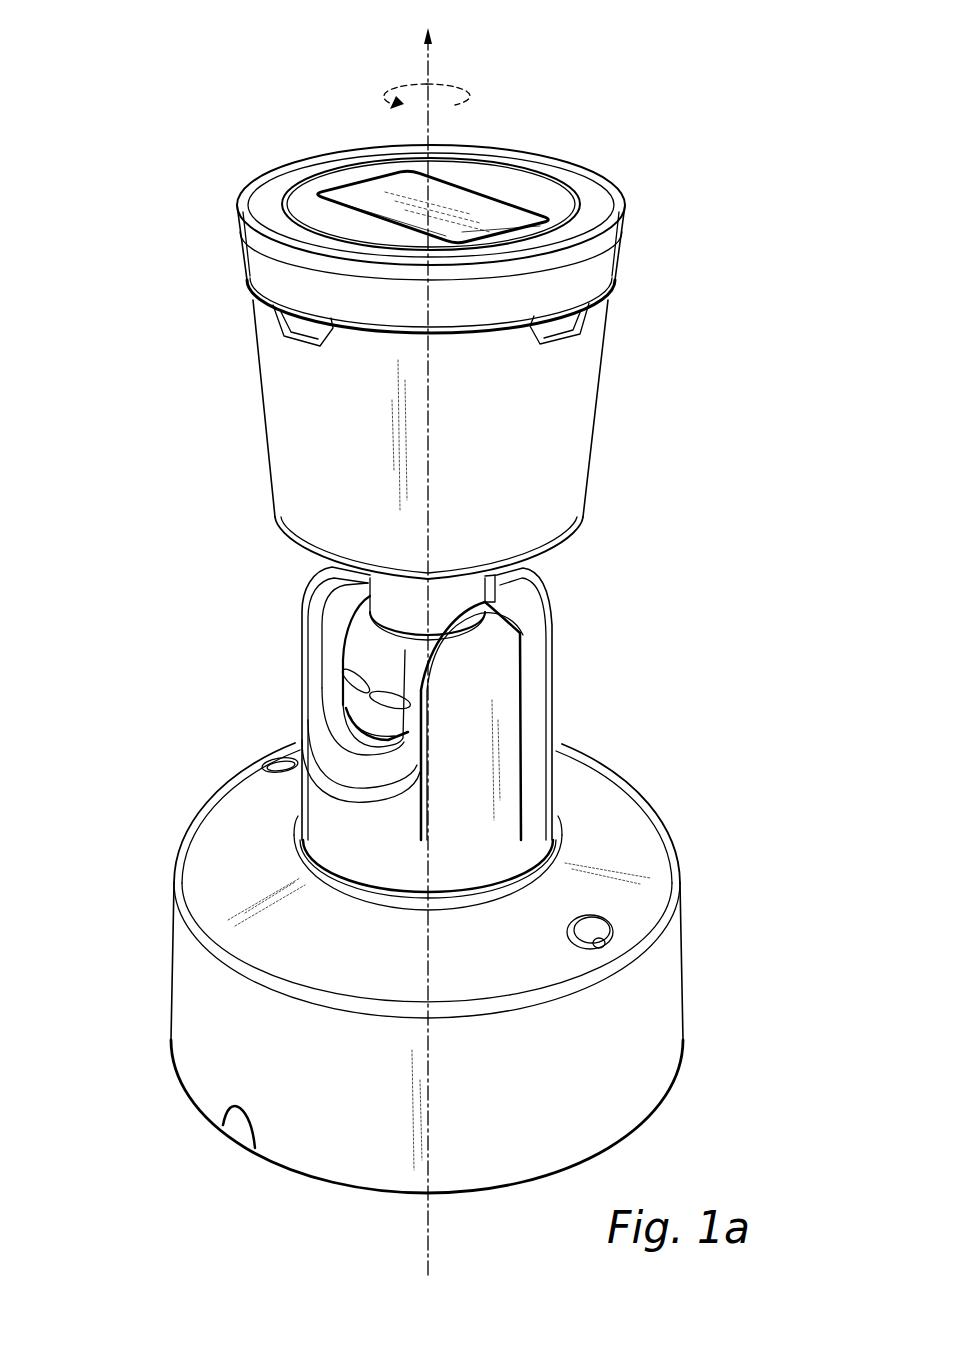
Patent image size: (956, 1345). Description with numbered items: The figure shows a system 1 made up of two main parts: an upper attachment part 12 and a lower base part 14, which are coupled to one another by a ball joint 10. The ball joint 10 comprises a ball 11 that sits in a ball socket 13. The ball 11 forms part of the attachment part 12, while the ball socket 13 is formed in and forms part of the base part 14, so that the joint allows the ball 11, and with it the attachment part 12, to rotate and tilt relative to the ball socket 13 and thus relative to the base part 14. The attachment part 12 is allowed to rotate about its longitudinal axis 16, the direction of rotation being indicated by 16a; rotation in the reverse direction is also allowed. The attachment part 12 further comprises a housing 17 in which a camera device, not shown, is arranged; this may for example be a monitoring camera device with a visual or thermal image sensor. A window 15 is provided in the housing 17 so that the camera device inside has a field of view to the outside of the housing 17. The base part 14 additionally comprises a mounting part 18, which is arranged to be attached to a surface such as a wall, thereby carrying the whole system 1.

The system 1 is at (560, 67).
The ball joint 10 is at (638, 599).
The ball 11 is at (363, 650).
The attachment part 12 is at (737, 152).
The ball socket 13 is at (535, 715).
The base part 14 is at (142, 571).
The window 15 is at (355, 195).
The longitudinal axis 16 is at (429, 70).
The rotation direction indication 16a is at (400, 85).
The housing 17 is at (562, 435).
The mounting part 18 is at (650, 868).